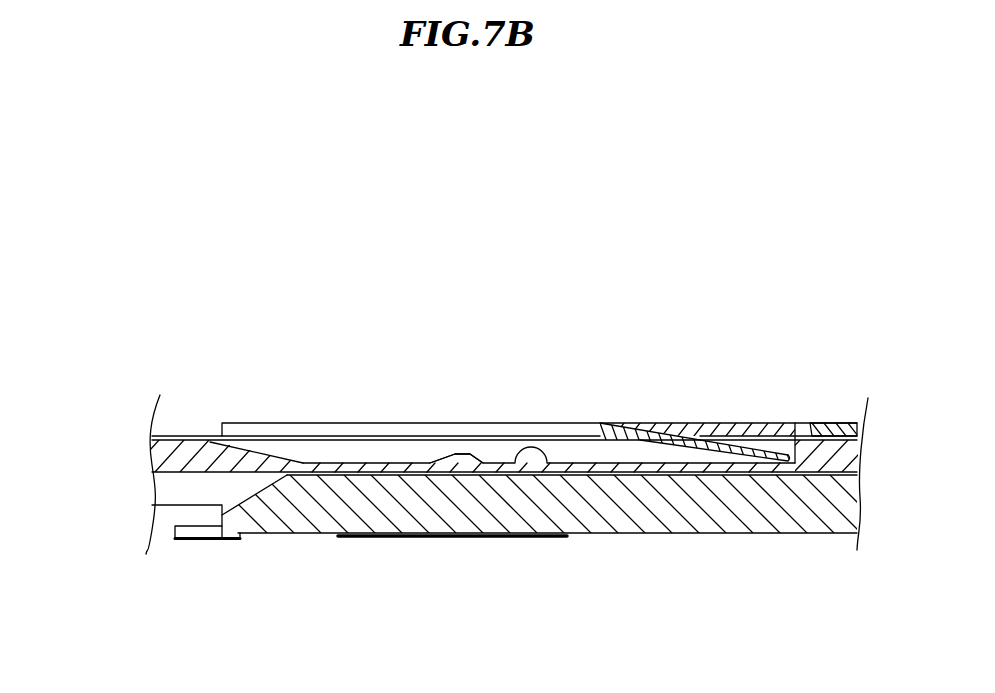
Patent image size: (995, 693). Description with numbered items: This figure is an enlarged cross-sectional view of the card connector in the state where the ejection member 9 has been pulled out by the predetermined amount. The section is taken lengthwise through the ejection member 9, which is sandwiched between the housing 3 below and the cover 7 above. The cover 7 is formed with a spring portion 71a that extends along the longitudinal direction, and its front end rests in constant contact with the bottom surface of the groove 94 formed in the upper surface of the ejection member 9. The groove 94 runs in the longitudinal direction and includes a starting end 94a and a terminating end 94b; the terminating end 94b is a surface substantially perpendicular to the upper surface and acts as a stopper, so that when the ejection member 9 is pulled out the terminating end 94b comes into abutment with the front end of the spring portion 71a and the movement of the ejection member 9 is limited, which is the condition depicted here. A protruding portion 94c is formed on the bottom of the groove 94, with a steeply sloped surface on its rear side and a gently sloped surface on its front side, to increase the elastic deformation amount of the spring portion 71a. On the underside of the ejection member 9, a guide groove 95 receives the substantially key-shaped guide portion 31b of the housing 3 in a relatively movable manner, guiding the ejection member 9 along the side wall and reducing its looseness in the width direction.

The housing 3 is at (636, 545).
The cover 7 is at (447, 417).
The ejection member 9 is at (145, 462).
The guide portion 31b is at (312, 485).
The spring portion 71a is at (698, 441).
The groove 94 is at (547, 466).
The starting end 94a is at (210, 442).
The terminating end 94b is at (778, 445).
The protruding portion 94c is at (430, 461).
The guide groove 95 is at (213, 474).